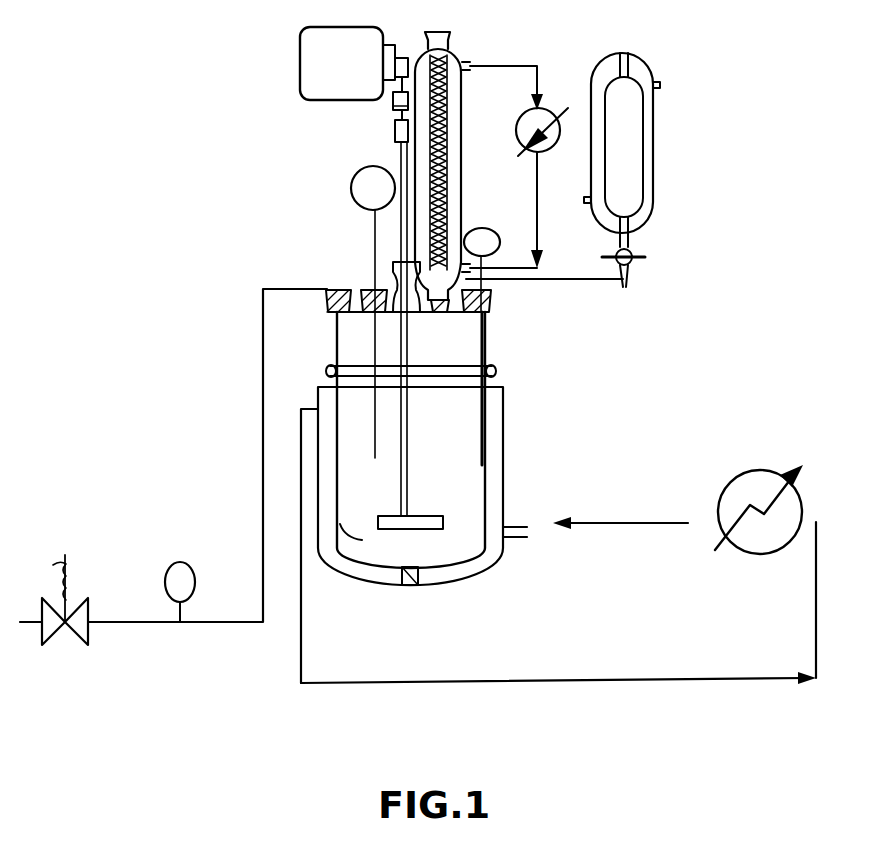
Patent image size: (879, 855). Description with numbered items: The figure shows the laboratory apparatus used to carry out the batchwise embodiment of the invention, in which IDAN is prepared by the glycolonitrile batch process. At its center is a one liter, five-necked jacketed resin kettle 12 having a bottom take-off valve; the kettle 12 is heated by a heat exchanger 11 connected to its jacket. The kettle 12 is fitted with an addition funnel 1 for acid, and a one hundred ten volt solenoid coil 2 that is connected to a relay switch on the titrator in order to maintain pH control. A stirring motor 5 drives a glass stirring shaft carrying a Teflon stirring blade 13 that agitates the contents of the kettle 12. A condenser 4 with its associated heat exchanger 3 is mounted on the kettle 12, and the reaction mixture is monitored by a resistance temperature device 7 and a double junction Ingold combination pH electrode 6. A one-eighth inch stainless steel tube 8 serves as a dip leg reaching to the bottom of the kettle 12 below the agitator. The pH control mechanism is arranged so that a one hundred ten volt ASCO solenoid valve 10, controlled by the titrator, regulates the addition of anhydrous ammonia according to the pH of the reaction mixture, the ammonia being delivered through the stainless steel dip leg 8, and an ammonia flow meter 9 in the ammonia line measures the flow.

The addition funnel 1 is at (622, 133).
The solenoid coil 2 is at (564, 264).
The heat exchanger 3 is at (515, 167).
The condenser 4 is at (438, 150).
The stirring motor 5 is at (338, 78).
The combination pH electrode 6 is at (366, 301).
The resistance temperature device 7 is at (482, 330).
The stainless steel tube 8 is at (255, 440).
The ammonia flow meter 9 is at (182, 576).
The solenoid valve 10 is at (65, 621).
The heat exchanger 11 is at (577, 574).
The jacketed resin kettle 12 is at (422, 535).
The stirring blade 13 is at (419, 335).